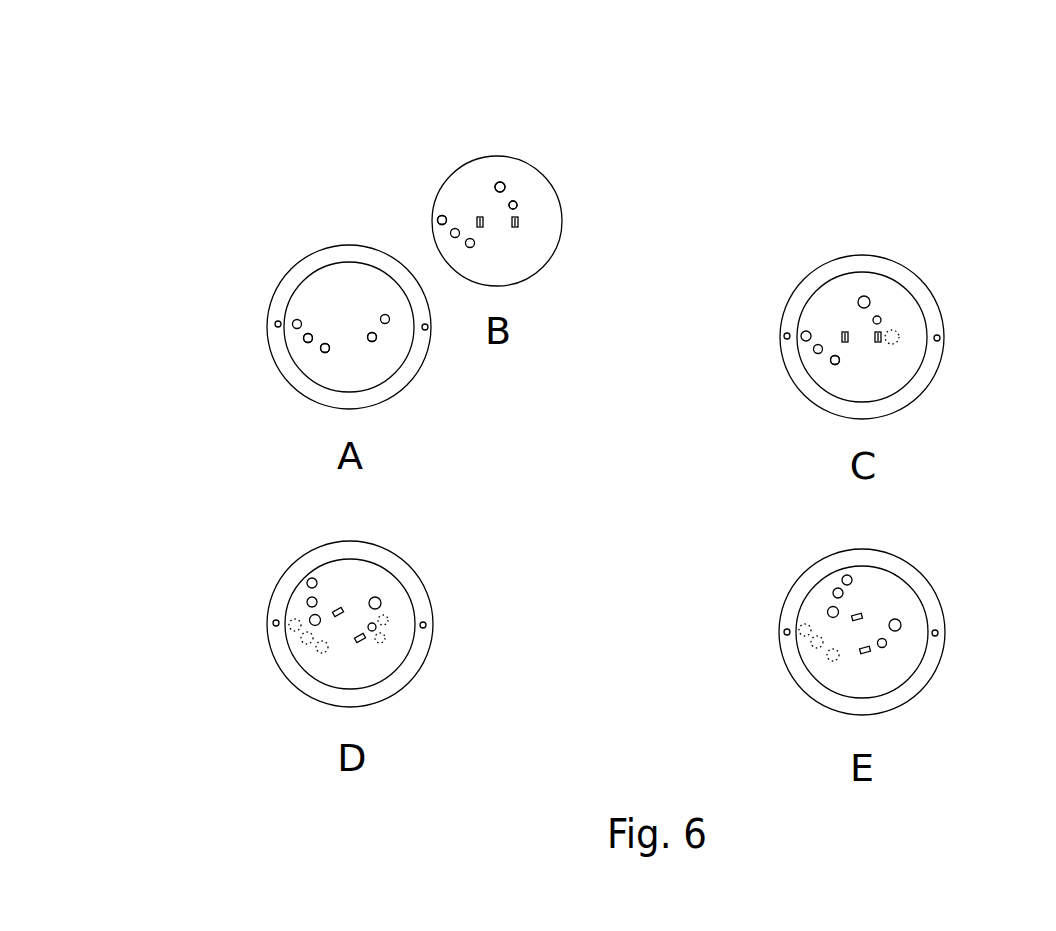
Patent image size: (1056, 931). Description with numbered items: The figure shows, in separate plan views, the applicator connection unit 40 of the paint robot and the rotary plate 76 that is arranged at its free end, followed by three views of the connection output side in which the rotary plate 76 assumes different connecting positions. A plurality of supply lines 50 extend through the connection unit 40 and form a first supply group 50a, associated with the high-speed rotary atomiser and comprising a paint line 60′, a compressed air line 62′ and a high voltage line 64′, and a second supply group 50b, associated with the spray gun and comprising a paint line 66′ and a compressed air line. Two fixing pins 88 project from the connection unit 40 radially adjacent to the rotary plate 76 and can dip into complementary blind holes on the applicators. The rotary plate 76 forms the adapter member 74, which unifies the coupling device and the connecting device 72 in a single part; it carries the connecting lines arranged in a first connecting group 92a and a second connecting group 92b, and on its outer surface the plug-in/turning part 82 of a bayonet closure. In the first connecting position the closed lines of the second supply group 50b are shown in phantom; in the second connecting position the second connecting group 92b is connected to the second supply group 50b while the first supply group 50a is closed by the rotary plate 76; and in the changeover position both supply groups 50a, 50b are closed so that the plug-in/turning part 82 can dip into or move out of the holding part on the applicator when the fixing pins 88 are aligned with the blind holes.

In FIG. 6A, the connection unit 40 is at (333, 250).
In FIG. 6C, the connection unit 40 is at (855, 260).
In FIG. 6D, the connection unit 40 is at (330, 552).
In FIG. 6E, the connection unit 40 is at (820, 570).
In FIG. 6A, the fixing pins 88 is at (276, 320).
In FIG. 6C, the fixing pins 88 is at (787, 333).
In FIG. 6D, the fixing pins 88 is at (273, 624).
In FIG. 6E, the fixing pins 88 is at (784, 632).
In FIG. 6A, the supply lines 50 is at (353, 358).
In FIG. 6B, the supply lines 50 is at (473, 195).
In FIG. 6C, the supply lines 50 is at (827, 315).
In FIG. 6D, the supply lines 50 is at (348, 655).
In FIG. 6E, the supply lines 50 is at (887, 607).
In FIG. 6A, the first supply group 50a is at (298, 347).
In FIG. 6D, the first supply group 50a is at (307, 650).
In FIG. 6E, the first supply group 50a is at (825, 658).
In FIG. 6A, the second supply group 50b is at (387, 340).
In FIG. 6C, the second supply group 50b is at (897, 350).
In FIG. 6D, the second supply group 50b is at (388, 633).
In FIG. 6A, the paint line 60′ is at (293, 327).
In FIG. 6A, the compressed air line 62′ is at (307, 344).
In FIG. 6A, the high voltage line 64′ is at (325, 353).
In FIG. 6A, the paint line 66′ is at (386, 316).
In FIG. 6C, the connecting device 72 is at (887, 338).
In FIG. 6B, the adapter member 74 is at (546, 190).
In FIG. 6C, the adapter member 74 is at (905, 305).
In FIG. 6D, the adapter member 74 is at (367, 650).
In FIG. 6E, the adapter member 74 is at (868, 660).
In FIG. 6B, the rotary plate 76 is at (527, 175).
In FIG. 6C, the rotary plate 76 is at (875, 290).
In FIG. 6D, the rotary plate 76 is at (370, 577).
In FIG. 6E, the rotary plate 76 is at (888, 588).
In FIG. 6B, the plug-in/turning part 82 is at (523, 225).
In FIG. 6B, the first connecting group 92a is at (452, 215).
In FIG. 6C, the first connecting group 92a is at (813, 358).
In FIG. 6D, the first connecting group 92a is at (302, 607).
In FIG. 6E, the first connecting group 92a is at (828, 600).
In FIG. 6B, the second connecting group 92b is at (512, 188).
In FIG. 6C, the second connecting group 92b is at (877, 302).
In FIG. 6D, the second connecting group 92b is at (393, 613).
In FIG. 6E, the second connecting group 92b is at (898, 642).